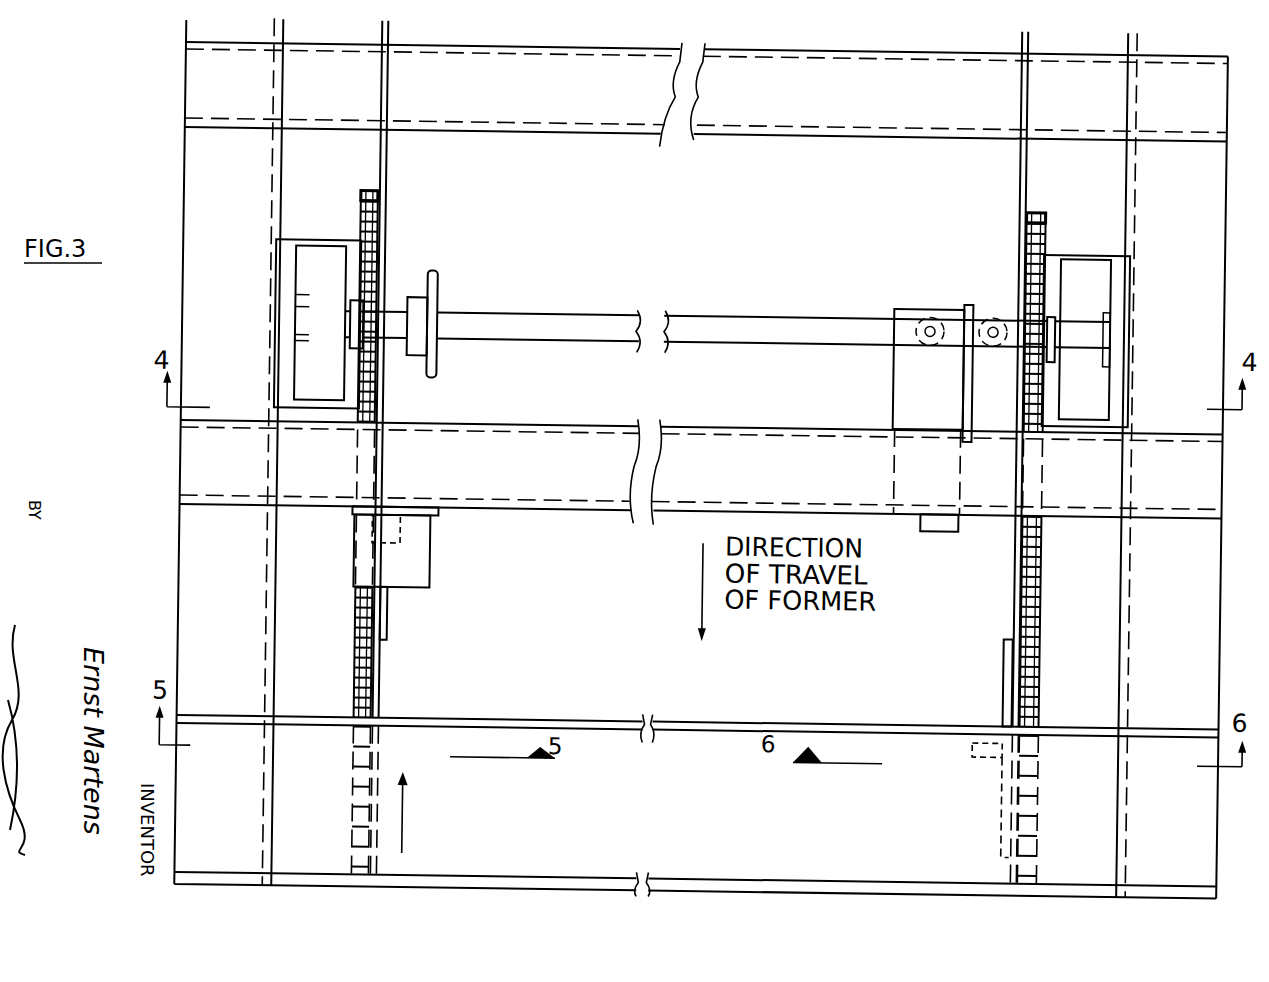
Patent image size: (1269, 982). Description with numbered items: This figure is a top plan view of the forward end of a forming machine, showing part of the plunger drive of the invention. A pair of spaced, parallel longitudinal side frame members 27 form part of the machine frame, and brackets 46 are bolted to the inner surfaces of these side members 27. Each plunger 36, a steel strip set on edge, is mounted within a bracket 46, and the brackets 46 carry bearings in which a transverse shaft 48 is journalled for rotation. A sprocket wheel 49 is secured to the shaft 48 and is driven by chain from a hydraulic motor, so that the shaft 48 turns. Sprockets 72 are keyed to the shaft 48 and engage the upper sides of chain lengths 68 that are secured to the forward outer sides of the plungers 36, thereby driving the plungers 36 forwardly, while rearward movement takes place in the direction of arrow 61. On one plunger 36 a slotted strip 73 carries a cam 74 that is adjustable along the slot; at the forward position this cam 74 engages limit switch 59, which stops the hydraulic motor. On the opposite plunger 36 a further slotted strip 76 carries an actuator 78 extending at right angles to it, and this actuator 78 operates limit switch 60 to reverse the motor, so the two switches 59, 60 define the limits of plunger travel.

The longitudinal side frame member 27 is at (695, 847).
The plunger 36 is at (390, 179).
The bracket 46 is at (293, 381).
The shaft 48 is at (624, 307).
The sprocket wheel 49 is at (437, 372).
The limit switch 59 is at (432, 569).
The limit switch 60 is at (898, 370).
The arrow 61 is at (416, 800).
The chain length 68 is at (370, 650).
The sprocket 72 is at (377, 304).
The slotted strip 73 is at (396, 624).
The cam 74 is at (409, 527).
The strip 76 is at (1012, 666).
The actuator 78 is at (985, 744).